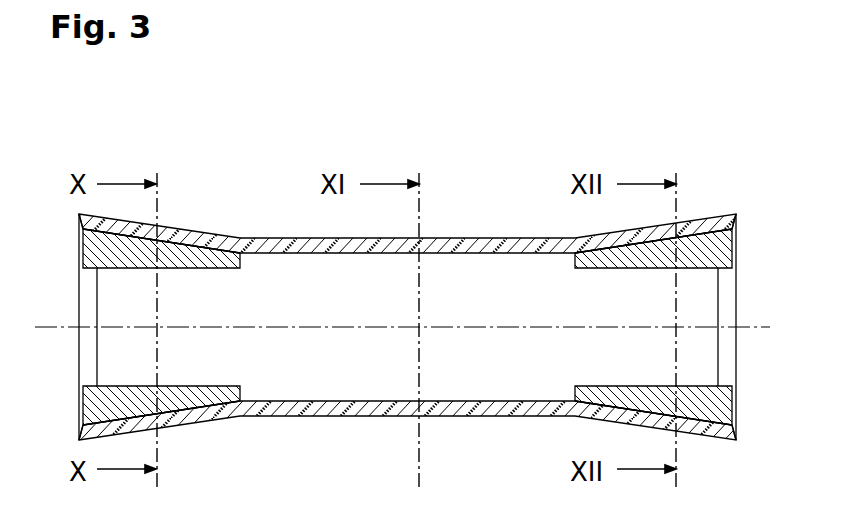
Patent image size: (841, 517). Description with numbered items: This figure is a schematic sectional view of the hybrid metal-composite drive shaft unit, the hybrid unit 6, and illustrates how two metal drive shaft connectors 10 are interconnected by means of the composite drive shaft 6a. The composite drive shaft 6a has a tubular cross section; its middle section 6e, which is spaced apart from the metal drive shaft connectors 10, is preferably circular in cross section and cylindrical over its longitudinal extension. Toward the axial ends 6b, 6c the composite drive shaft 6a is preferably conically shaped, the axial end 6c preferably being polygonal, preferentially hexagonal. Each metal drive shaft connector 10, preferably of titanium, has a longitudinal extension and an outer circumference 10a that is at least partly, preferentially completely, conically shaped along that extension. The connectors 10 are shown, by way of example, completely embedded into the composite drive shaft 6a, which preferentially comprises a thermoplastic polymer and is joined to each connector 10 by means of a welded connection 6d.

The hybrid unit 6 is at (443, 186).
The composite drive shaft 6a is at (274, 243).
The axial end 6b is at (75, 428).
The axial end 6c is at (740, 427).
The welded connection 6d is at (634, 228).
The middle section 6e is at (486, 420).
The metal drive shaft connector 10 is at (95, 248).
The outer circumference 10a is at (198, 228).